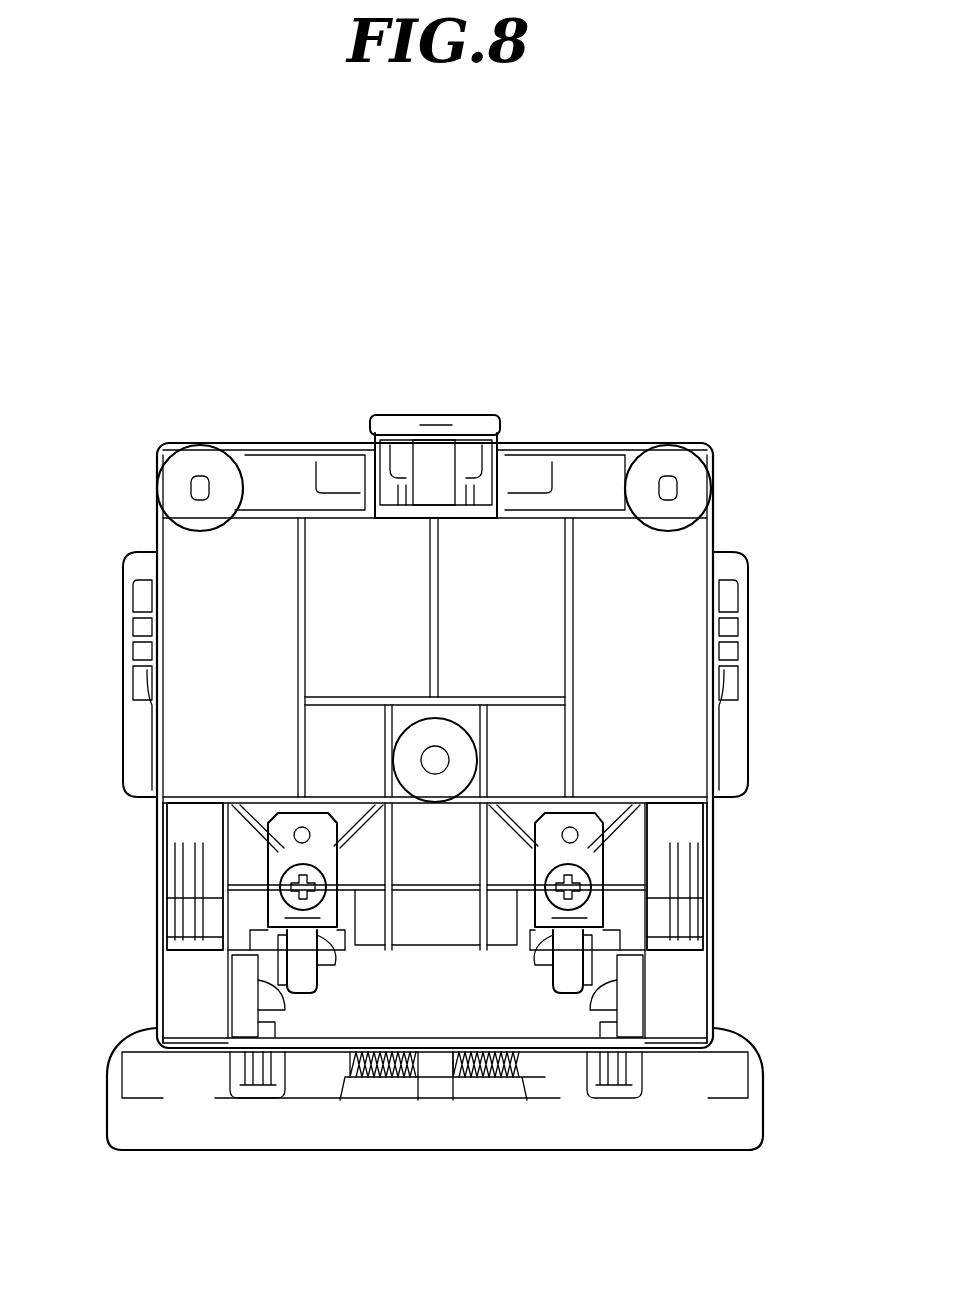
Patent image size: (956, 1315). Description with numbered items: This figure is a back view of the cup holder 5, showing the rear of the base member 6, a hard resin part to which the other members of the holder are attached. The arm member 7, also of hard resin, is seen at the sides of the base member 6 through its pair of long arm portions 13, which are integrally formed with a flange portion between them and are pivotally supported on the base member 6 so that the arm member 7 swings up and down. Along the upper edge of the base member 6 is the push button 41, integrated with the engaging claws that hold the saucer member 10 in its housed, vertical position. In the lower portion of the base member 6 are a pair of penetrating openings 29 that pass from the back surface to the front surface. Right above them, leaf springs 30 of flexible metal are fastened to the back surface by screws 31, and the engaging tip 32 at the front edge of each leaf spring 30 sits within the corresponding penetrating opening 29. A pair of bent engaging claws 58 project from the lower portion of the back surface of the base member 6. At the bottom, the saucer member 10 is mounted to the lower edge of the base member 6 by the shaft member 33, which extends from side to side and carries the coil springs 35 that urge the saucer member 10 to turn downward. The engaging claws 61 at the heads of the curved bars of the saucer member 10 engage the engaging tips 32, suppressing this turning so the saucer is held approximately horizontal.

The cup holder 5 is at (252, 332).
The base member 6 is at (158, 828).
The arm member 7 is at (758, 733).
The saucer member 10 is at (765, 1118).
The arm portions 13 is at (123, 648).
The penetrating openings 29 is at (272, 935).
The leaf springs 30 is at (283, 822).
The screws 31 is at (325, 885).
The engaging tip 32 is at (337, 965).
The shaft member 33 is at (440, 1070).
The coil springs 35 is at (372, 1078).
The push button 41 is at (437, 430).
The engaging claws 58 is at (170, 864).
The engaging claw 61 is at (295, 978).